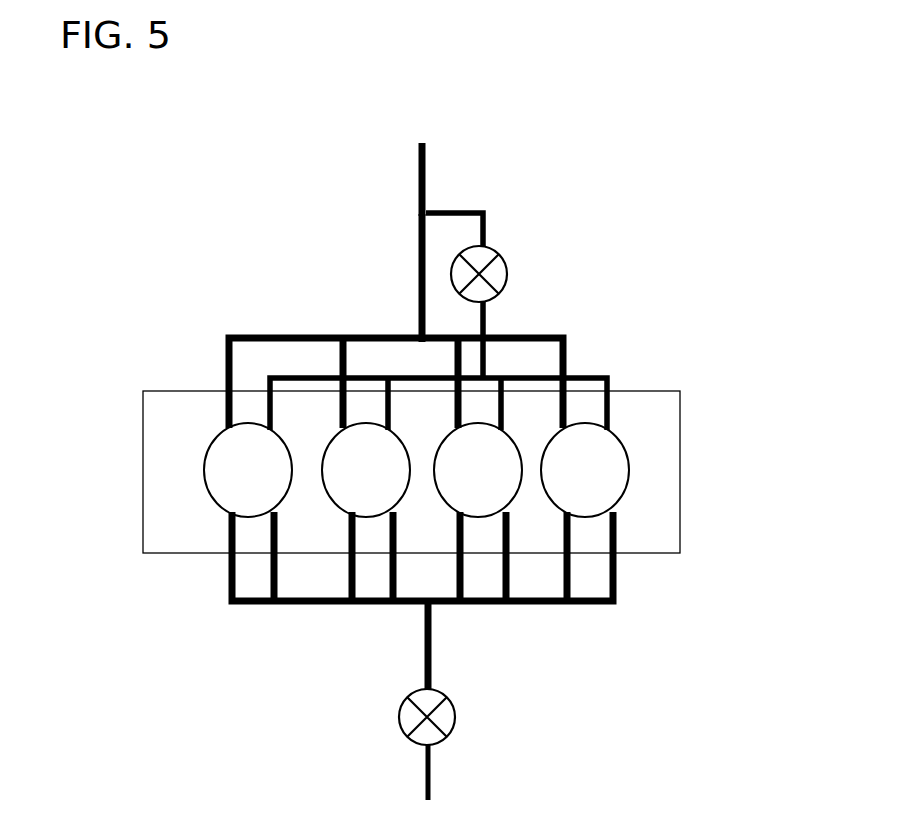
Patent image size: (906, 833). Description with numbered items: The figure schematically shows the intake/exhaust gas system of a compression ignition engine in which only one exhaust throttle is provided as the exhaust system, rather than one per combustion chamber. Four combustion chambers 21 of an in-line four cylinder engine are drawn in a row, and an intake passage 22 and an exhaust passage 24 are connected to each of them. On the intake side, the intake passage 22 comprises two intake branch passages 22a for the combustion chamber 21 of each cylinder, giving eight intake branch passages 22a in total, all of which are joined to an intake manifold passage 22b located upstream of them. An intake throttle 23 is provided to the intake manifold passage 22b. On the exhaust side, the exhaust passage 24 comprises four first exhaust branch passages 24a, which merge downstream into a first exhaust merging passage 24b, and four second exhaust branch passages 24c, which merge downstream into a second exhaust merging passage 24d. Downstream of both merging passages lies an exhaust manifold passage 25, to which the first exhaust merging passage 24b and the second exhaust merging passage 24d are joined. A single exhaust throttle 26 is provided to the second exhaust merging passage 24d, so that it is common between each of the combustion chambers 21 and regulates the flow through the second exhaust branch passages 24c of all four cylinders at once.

The combustion chamber 21 is at (208, 492).
The intake passage 22 is at (357, 652).
The intake branch passage 22a is at (228, 577).
The intake manifold passage 22b is at (432, 657).
The intake throttle 23 is at (452, 732).
The exhaust passage 24 is at (265, 310).
The first exhaust branch passage 24a is at (225, 357).
The first exhaust merging passage 24b is at (420, 258).
The second exhaust branch passage 24c is at (268, 404).
The second exhaust merging passage 24d is at (488, 227).
The exhaust manifold passage 25 is at (426, 178).
The exhaust throttle 26 is at (508, 272).